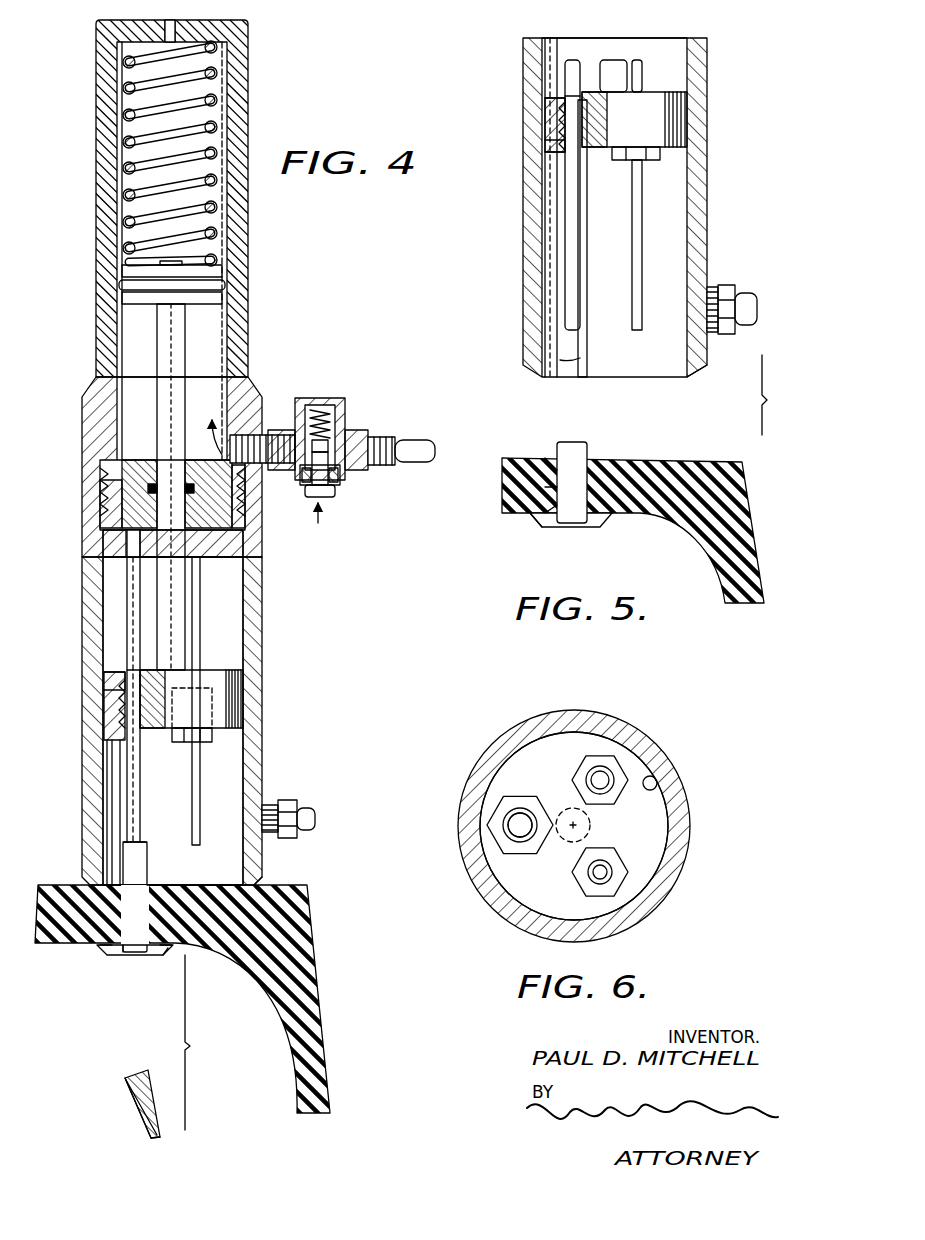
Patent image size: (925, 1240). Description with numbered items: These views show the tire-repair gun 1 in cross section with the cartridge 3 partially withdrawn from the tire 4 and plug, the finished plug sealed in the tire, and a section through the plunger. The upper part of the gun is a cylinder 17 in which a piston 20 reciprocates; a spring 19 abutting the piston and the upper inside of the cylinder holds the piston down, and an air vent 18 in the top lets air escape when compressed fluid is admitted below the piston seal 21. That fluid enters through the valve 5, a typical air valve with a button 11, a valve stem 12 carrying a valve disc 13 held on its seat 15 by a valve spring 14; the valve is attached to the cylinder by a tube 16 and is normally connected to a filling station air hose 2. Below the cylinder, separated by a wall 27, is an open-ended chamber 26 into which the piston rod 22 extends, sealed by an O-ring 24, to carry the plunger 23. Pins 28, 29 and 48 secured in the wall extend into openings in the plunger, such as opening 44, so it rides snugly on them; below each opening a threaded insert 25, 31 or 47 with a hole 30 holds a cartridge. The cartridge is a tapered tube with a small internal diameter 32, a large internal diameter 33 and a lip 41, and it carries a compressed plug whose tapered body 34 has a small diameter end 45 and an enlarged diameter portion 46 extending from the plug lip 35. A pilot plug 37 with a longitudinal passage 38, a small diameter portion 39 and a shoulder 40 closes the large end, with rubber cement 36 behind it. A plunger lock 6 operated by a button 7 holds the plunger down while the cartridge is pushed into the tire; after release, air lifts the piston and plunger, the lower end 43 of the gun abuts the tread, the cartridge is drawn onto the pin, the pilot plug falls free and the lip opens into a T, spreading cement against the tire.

In FIG. 4, the gun 1 is at (253, 254).
In FIG. 5, the gun 1 is at (712, 53).
In FIG. 6, the gun 1 is at (664, 738).
In FIG. 4, the air hose 2 is at (420, 440).
In FIG. 4, the cartridge 3 is at (152, 852).
In FIG. 5, the cartridge 3 is at (592, 250).
In FIG. 6, the cartridge 3 is at (504, 822).
In FIG. 4, the tire 4 is at (285, 935).
In FIG. 5, the tire 4 is at (755, 530).
In FIG. 4, the valve 5 is at (338, 396).
In FIG. 4, the plunger lock 6 is at (296, 800).
In FIG. 5, the plunger lock 6 is at (724, 286).
In FIG. 4, the button 7 is at (316, 816).
In FIG. 5, the button 7 is at (758, 305).
In FIG. 4, the button 11 is at (330, 492).
In FIG. 4, the valve stem 12 is at (336, 474).
In FIG. 4, the valve disc 13 is at (322, 433).
In FIG. 4, the valve spring 14 is at (312, 445).
In FIG. 4, the seat 15 is at (332, 448).
In FIG. 4, the tube 16 is at (272, 440).
In FIG. 4, the cylinder 17 is at (238, 50).
In FIG. 4, the air vent 18 is at (168, 22).
In FIG. 4, the spring 19 is at (216, 100).
In FIG. 4, the piston 20 is at (125, 272).
In FIG. 4, the piston seal 21 is at (226, 286).
In FIG. 4, the piston rod 22 is at (166, 347).
In FIG. 5, the piston rod 22 is at (612, 62).
In FIG. 6, the piston rod 22 is at (592, 824).
In FIG. 4, the plunger 23 is at (222, 676).
In FIG. 5, the plunger 23 is at (645, 108).
In FIG. 6, the plunger 23 is at (502, 776).
In FIG. 4, the O-ring 24 is at (150, 488).
In FIG. 4, the insert 25 is at (110, 768).
In FIG. 5, the insert 25 is at (551, 207).
In FIG. 6, the insert 25 is at (508, 848).
In FIG. 4, the chamber 26 is at (225, 607).
In FIG. 5, the chamber 26 is at (700, 174).
In FIG. 6, the chamber 26 is at (652, 775).
In FIG. 4, the wall 27 is at (212, 541).
In FIG. 4, the pin 28 is at (134, 809).
In FIG. 5, the pin 28 is at (570, 70).
In FIG. 6, the pin 28 is at (522, 838).
In FIG. 4, the pin 29 is at (198, 578).
In FIG. 5, the pin 29 is at (638, 62).
In FIG. 6, the pin 29 is at (610, 869).
In FIG. 5, the hole 30 is at (566, 142).
In FIG. 4, the threaded plunger insert 31 is at (208, 743).
In FIG. 5, the threaded plunger insert 31 is at (665, 155).
In FIG. 6, the threaded plunger insert 31 is at (606, 881).
In FIG. 4, the small internal diameter 32 is at (128, 700).
In FIG. 5, the small internal diameter 32 is at (566, 128).
In FIG. 4, the large internal diameter 33 is at (122, 950).
In FIG. 5, the large internal diameter 33 is at (586, 360).
In FIG. 4, the tapered body 34 is at (150, 885).
In FIG. 5, the tapered body 34 is at (550, 487).
In FIG. 4, the plug lip 35 is at (168, 953).
In FIG. 5, the plug lip 35 is at (548, 525).
In FIG. 4, the rubber cement 36 is at (105, 935).
In FIG. 5, the rubber cement 36 is at (553, 466).
In FIG. 4, the pilot plug 37 is at (143, 1115).
In FIG. 4, the longitudinal passage 38 is at (150, 1072).
In FIG. 4, the small diameter portion 39 is at (128, 1080).
In FIG. 4, the shoulder 40 is at (128, 1092).
In FIG. 4, the lip 41 is at (118, 690).
In FIG. 5, the lip 41 is at (562, 112).
In FIG. 4, the lower end 43 is at (268, 880).
In FIG. 5, the lower end 43 is at (692, 372).
In FIG. 4, the opening 44 is at (133, 670).
In FIG. 5, the opening 44 is at (572, 100).
In FIG. 4, the small diameter end 45 is at (135, 843).
In FIG. 5, the small diameter end 45 is at (575, 442).
In FIG. 4, the enlarged diameter portion 46 is at (140, 950).
In FIG. 5, the enlarged diameter portion 46 is at (578, 517).
In FIG. 6, the threaded insert 47 is at (612, 762).
In FIG. 6, the pin 48 is at (594, 778).